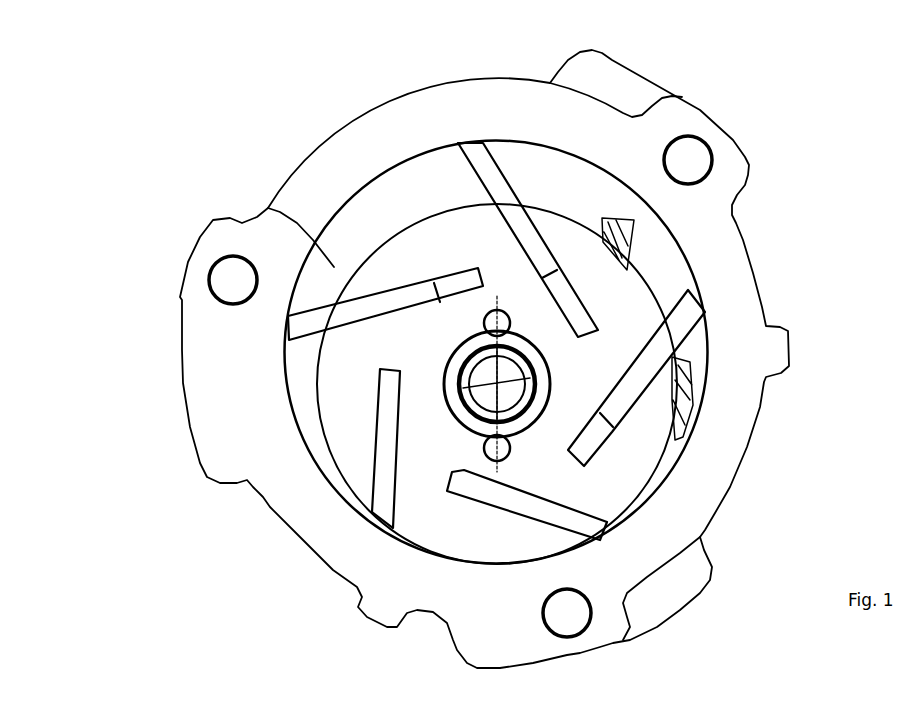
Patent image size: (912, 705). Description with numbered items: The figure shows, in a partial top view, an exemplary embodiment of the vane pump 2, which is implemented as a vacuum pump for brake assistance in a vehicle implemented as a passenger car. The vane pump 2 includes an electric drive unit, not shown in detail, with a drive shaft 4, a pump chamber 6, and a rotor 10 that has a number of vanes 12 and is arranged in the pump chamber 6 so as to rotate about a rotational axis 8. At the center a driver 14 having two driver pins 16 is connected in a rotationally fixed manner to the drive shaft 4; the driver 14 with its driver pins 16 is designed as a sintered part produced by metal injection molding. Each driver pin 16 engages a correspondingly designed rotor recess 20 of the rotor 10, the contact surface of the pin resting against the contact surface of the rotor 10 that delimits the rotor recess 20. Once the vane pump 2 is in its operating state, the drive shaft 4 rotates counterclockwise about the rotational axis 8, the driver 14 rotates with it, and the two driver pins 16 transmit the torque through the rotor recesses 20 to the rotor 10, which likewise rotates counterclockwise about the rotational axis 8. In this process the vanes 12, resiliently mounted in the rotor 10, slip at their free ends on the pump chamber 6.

The vane pump 2 is at (131, 43).
The drive shaft 4 is at (462, 380).
The pump chamber 6 is at (268, 208).
The rotational axis 8 is at (450, 423).
The rotor 10 is at (390, 260).
The vanes 12 is at (313, 323).
The driver 14 is at (553, 355).
The driver pins 16 is at (510, 323).
The rotor recess 20 is at (515, 312).